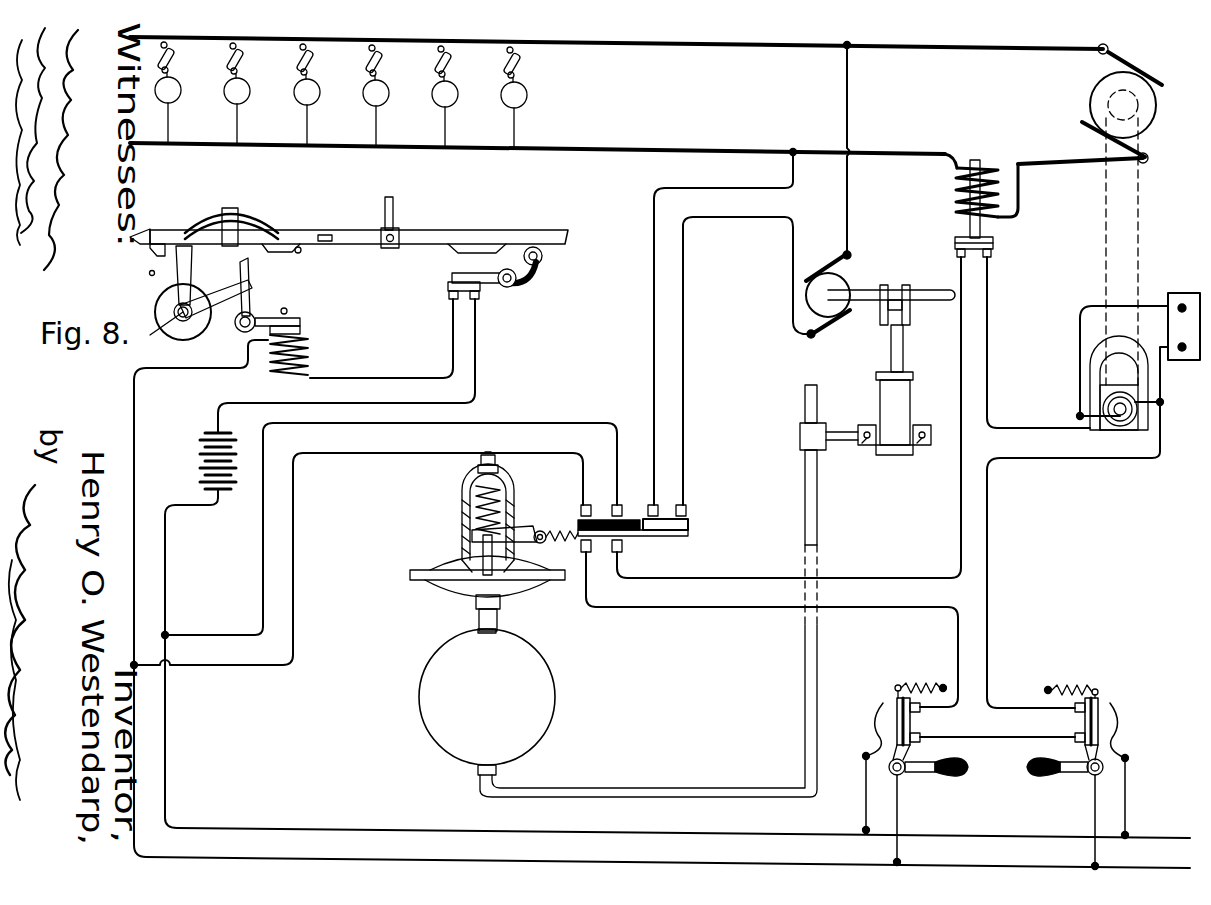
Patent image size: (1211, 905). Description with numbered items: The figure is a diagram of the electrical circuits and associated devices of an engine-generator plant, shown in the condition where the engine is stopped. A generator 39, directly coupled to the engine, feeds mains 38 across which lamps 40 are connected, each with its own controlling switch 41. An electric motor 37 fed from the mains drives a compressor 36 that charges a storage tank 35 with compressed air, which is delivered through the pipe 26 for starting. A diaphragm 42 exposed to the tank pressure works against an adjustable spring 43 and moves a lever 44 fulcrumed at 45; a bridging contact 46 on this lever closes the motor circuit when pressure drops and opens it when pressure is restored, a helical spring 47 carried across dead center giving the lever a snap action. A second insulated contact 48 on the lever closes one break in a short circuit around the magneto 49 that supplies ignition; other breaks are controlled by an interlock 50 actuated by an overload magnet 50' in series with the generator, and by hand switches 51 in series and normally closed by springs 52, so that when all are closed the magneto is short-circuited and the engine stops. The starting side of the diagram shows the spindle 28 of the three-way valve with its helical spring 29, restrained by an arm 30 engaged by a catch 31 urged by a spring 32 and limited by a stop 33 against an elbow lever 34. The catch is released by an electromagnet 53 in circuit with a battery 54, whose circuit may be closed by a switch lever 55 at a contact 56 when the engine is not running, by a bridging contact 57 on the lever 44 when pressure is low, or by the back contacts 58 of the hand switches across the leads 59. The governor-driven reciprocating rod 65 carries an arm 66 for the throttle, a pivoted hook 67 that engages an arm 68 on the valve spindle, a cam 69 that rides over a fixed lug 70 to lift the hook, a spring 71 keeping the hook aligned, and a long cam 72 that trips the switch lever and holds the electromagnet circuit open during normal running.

The pipe 26 is at (805, 403).
The spindle 28 is at (168, 322).
The helical spring 29 is at (210, 330).
The arm 30 is at (205, 296).
The catch 31 is at (252, 284).
The spring 32 is at (265, 316).
The stop 33 is at (290, 312).
The elbow lever 34 is at (302, 328).
The storage tank 35 is at (487, 702).
The compressor 36 is at (880, 393).
The electric motor 37 is at (850, 275).
The mains 38 is at (624, 42).
The generator 39 is at (1091, 101).
The lamps 40 is at (172, 95).
The controlling switch 41 is at (232, 56).
The diaphragm 42 is at (472, 567).
The adjustable spring 43 is at (470, 500).
The lever 44 is at (520, 528).
The fulcrum 45 is at (580, 540).
The bridging contact 46 is at (672, 522).
The helical spring 47 is at (565, 534).
The insulated contact 48 is at (619, 550).
The magneto 49 is at (1093, 392).
The interlock 50 is at (958, 208).
The overload magnet 50' is at (969, 190).
The hand switches 51 is at (910, 752).
The springs 52 is at (914, 682).
The electromagnet 53 is at (312, 354).
The battery 54 is at (200, 460).
The switch lever 55 is at (460, 272).
The contact 56 is at (475, 300).
The bridging contact 57 is at (600, 520).
The back contact 58 is at (872, 718).
The leads 59 is at (668, 862).
The reciprocating rod 65 is at (486, 230).
The arm 66 is at (395, 202).
The hook 67 is at (145, 236).
The arm 68 is at (160, 260).
The cam 69 is at (284, 254).
The fixed lug 70 is at (324, 232).
The spring 71 is at (252, 212).
The cam 72 is at (464, 248).